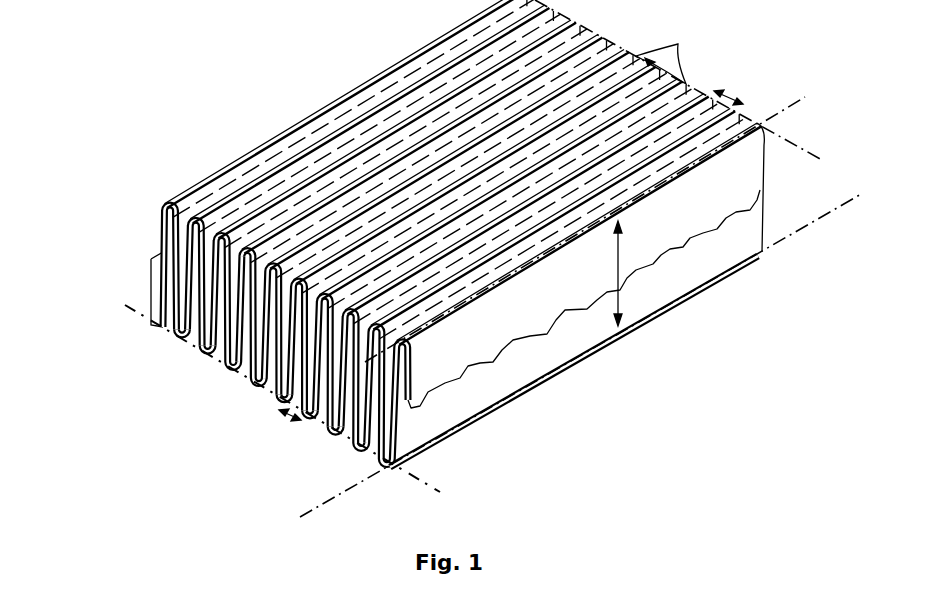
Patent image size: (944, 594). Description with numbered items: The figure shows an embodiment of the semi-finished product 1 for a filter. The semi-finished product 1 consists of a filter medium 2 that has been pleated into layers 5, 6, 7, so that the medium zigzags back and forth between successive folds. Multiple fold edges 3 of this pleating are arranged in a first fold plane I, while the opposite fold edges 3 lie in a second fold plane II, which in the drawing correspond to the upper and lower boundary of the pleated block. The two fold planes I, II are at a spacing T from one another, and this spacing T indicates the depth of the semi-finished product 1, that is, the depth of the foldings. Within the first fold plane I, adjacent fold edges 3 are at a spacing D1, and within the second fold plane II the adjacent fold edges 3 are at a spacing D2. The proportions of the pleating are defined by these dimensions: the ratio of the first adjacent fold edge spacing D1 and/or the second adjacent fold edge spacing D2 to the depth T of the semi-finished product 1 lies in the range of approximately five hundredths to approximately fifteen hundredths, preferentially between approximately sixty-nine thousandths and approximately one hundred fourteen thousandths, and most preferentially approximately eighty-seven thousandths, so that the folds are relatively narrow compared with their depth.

The semi-finished product 1 is at (323, 70).
The filter medium 2 is at (165, 206).
The fold edges 3 is at (673, 47).
The layer 5 is at (273, 365).
The layer 6 is at (253, 310).
The layer 7 is at (240, 300).
The first adjacent fold edge spacing D1 is at (735, 91).
The second adjacent fold edge spacing D2 is at (284, 425).
The first fold plane I is at (790, 112).
The second fold plane II is at (320, 503).
The spacing T is at (618, 264).